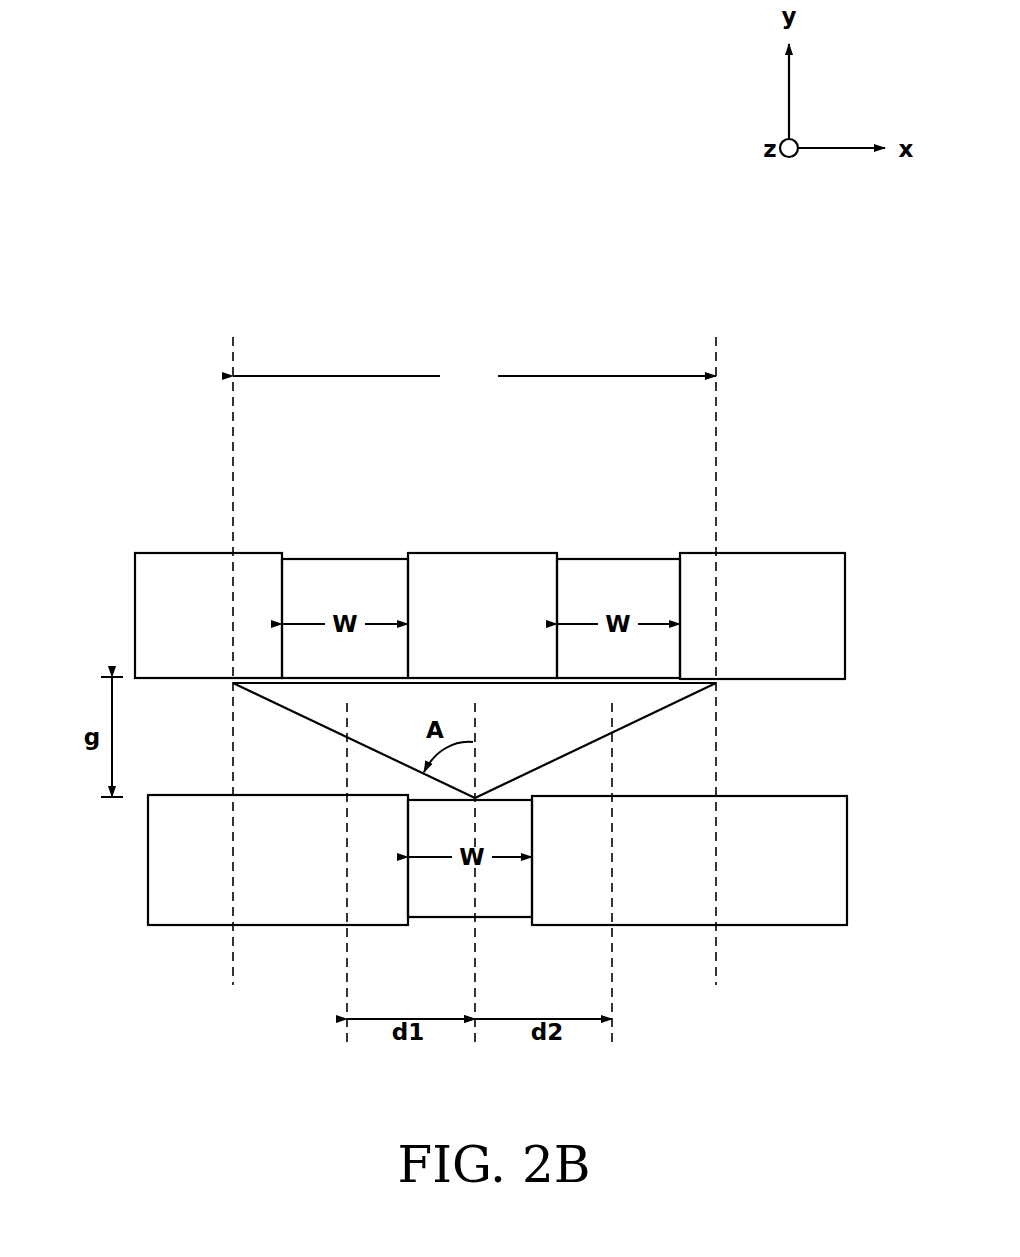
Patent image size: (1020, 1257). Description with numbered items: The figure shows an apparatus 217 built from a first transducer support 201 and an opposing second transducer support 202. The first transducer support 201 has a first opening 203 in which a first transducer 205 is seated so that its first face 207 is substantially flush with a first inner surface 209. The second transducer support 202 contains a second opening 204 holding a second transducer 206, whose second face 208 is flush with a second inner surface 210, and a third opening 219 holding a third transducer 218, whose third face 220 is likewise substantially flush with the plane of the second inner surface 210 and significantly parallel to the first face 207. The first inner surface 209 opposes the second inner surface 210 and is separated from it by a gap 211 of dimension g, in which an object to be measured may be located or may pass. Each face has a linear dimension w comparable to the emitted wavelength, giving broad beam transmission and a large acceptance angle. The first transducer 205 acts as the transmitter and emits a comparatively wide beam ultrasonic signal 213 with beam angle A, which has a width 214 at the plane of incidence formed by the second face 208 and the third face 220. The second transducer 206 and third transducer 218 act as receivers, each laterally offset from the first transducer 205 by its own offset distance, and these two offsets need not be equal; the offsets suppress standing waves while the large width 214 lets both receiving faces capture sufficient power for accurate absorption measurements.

The first transducer support 201 is at (544, 861).
The second transducer support 202 is at (820, 595).
The first opening 203 is at (533, 887).
The second opening 204 is at (395, 547).
The first transducer 205 is at (503, 905).
The second transducer 206 is at (331, 570).
The first face 207 is at (518, 800).
The second face 208 is at (298, 668).
The first inner surface 209 is at (338, 806).
The second inner surface 210 is at (728, 683).
The gap 211 is at (820, 733).
The ultrasonic signal 213 is at (262, 700).
The width 214 is at (474, 376).
The apparatus 217 is at (478, 268).
The third transducer 218 is at (577, 572).
The third opening 219 is at (672, 557).
The third face 220 is at (635, 672).